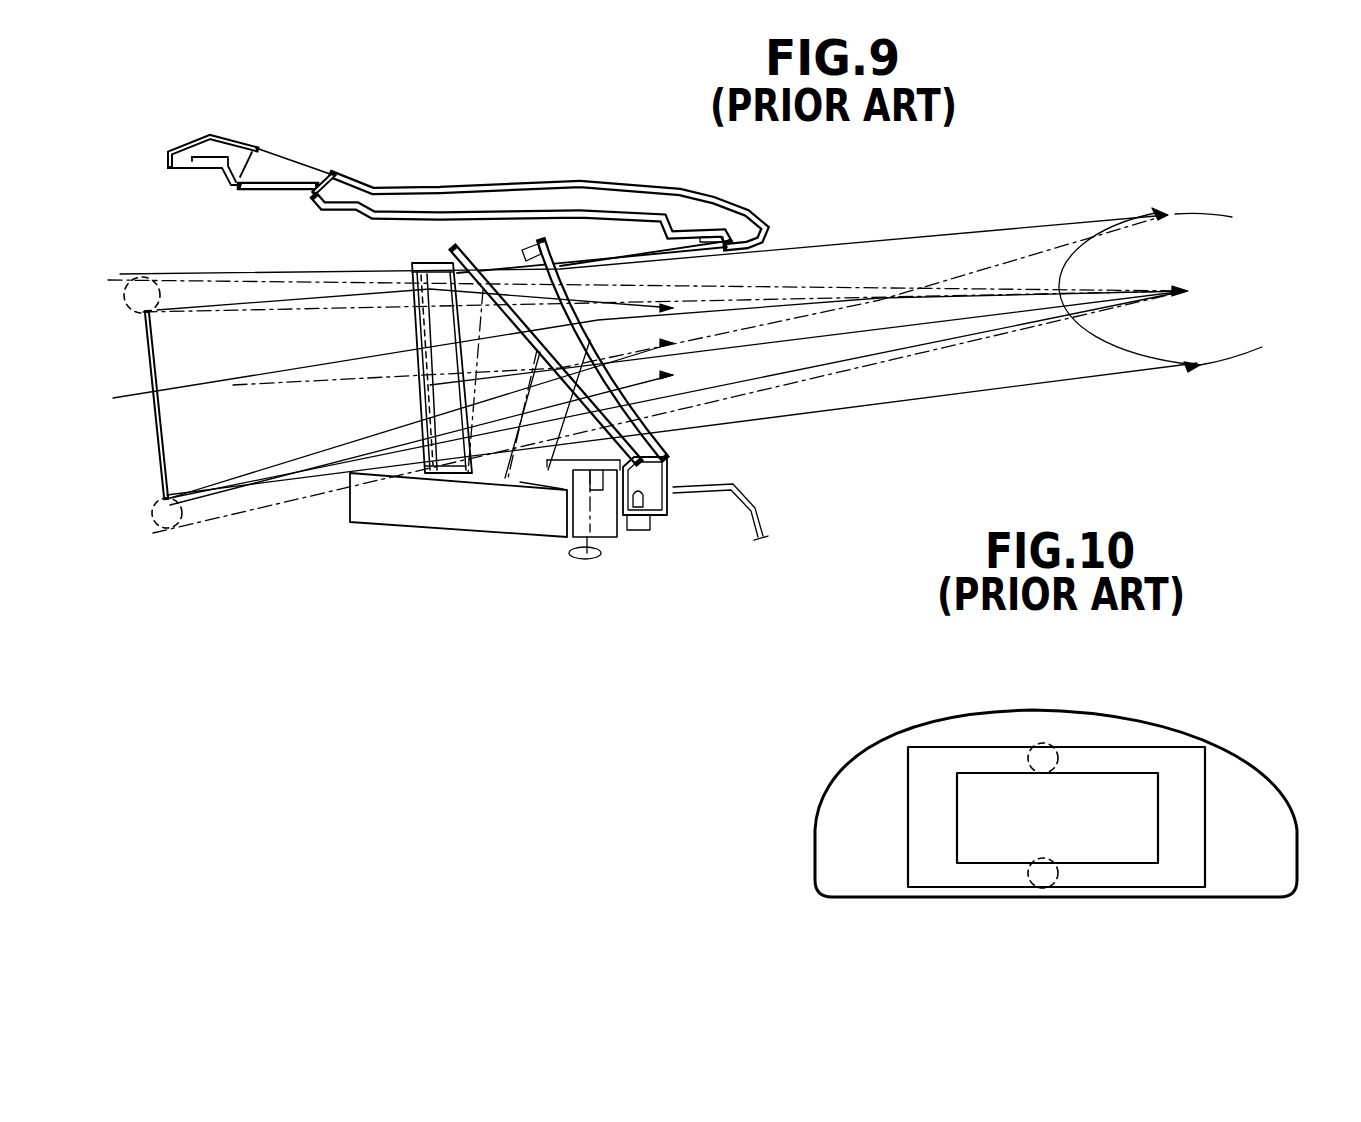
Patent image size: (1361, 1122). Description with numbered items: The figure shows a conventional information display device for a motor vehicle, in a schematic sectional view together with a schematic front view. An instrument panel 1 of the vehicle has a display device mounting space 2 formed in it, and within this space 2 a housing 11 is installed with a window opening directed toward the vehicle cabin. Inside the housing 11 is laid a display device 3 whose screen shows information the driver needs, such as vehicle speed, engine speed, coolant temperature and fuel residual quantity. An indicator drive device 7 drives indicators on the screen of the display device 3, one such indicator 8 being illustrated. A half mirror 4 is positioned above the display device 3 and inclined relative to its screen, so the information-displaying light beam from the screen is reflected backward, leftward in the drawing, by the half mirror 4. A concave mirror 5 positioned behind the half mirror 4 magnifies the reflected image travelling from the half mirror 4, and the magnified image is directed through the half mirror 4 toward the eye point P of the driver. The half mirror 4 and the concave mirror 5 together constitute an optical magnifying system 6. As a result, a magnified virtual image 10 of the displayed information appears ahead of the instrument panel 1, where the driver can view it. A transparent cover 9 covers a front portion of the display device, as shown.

In FIG. 9, the instrument panel 1 is at (467, 192).
In FIG. 10, the instrument panel 1 is at (1077, 708).
In FIG. 9, the display device mounting space 2 is at (588, 254).
In FIG. 10, the display device mounting space 2 is at (1237, 773).
In FIG. 9, the display device 3 is at (410, 518).
In FIG. 9, the half mirror 4 is at (528, 318).
In FIG. 9, the concave mirror 5 is at (424, 400).
In FIG. 9, the optical magnifying system 6 is at (411, 330).
In FIG. 9, the indicator drive device 7 is at (610, 527).
In FIG. 9, the indicator 8 is at (547, 462).
In FIG. 9, the transparent cover 9 is at (582, 332).
In FIG. 9, the magnified virtual image 10 is at (150, 448).
In FIG. 10, the magnified virtual image 10 is at (1130, 772).
In FIG. 9, the housing 11 is at (510, 262).
In FIG. 10, the housing 11 is at (1205, 830).
In FIG. 9, the eye point P is at (1190, 289).